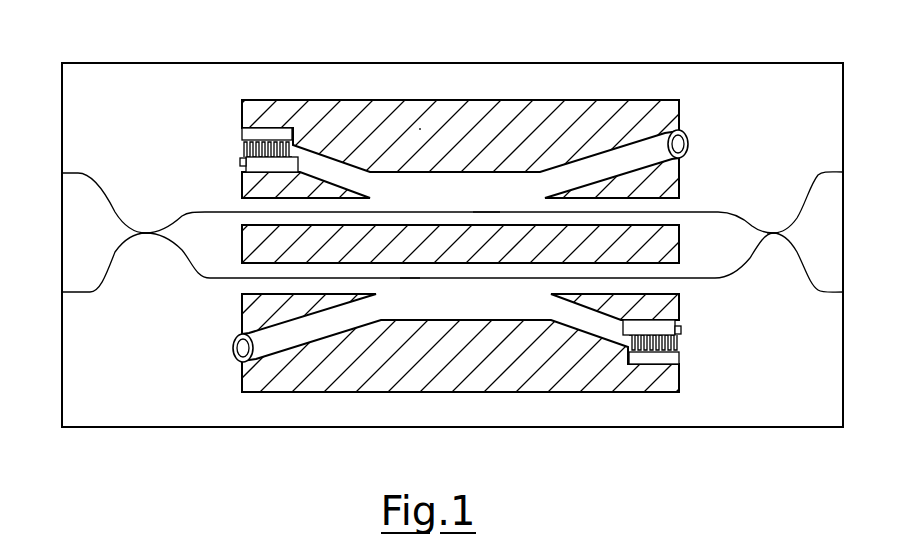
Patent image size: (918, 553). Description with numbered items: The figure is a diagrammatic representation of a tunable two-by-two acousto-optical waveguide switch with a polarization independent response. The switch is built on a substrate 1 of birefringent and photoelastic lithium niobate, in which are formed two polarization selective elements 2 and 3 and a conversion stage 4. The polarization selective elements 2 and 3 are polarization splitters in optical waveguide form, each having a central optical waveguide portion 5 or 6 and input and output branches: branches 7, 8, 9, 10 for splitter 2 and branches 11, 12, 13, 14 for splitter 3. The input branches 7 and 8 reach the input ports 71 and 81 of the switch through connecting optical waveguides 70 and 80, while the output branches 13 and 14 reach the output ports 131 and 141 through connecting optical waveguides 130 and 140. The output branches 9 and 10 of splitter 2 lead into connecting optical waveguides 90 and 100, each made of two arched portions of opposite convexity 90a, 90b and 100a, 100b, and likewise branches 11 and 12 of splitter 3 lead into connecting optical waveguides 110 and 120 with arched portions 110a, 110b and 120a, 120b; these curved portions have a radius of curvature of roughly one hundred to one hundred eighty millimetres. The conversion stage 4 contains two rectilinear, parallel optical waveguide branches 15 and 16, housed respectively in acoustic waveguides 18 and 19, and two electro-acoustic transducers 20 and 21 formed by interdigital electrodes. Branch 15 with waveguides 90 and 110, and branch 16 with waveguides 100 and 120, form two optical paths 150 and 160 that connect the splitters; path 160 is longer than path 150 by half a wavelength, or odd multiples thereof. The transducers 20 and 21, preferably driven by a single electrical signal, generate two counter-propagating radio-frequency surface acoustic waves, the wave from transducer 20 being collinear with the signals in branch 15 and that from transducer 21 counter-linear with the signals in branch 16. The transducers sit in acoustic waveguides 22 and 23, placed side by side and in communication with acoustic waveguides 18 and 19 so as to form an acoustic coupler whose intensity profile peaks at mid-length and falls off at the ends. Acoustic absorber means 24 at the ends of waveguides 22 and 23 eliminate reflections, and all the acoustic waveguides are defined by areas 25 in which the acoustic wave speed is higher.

The substrate 1 is at (147, 430).
The polarization selective element 2 is at (145, 239).
The polarization selective element 3 is at (775, 239).
The conversion stage 4 is at (539, 97).
The central optical waveguide portion 5 is at (146, 228).
The central optical waveguide portion 6 is at (780, 230).
The input branch 7 is at (138, 226).
The input branch 8 is at (136, 242).
The output branch 9 is at (152, 228).
The output branch 10 is at (160, 240).
The output branch 11 is at (778, 228).
The output branch 12 is at (766, 265).
The output branch 13 is at (792, 230).
The output branch 14 is at (802, 265).
The optical waveguide branch 15 is at (428, 214).
The optical waveguide branch 16 is at (450, 279).
The acoustic waveguide 18 is at (420, 130).
The acoustic waveguide 19 is at (505, 320).
The electro-acoustic transducer 20 is at (262, 145).
The electro-acoustic transducer 21 is at (658, 340).
The acoustic waveguide 22 is at (362, 165).
The acoustic waveguide 23 is at (330, 330).
The acoustic absorber means 24 is at (678, 128).
The area 25 is at (318, 150).
The connecting optical waveguide 70 is at (100, 176).
The input port 71 is at (62, 170).
The connecting optical waveguide 80 is at (102, 289).
The input port 81 is at (62, 295).
The connecting optical waveguide 90 is at (188, 208).
The curved portion 90a is at (163, 230).
The curved portion 90b is at (200, 212).
The connecting optical waveguide 100 is at (198, 272).
The curved portion 100a is at (182, 255).
The curved portion 100b is at (217, 282).
The connecting optical waveguide 110 is at (743, 213).
The curved portion 110a is at (762, 228).
The curved portion 110b is at (722, 215).
The connecting optical waveguide 120 is at (742, 264).
The curved portion 120a is at (757, 272).
The curved portion 120b is at (722, 280).
The connecting optical waveguide 130 is at (815, 174).
The output port 131 is at (845, 172).
The connecting optical waveguide 140 is at (815, 294).
The output port 141 is at (845, 293).
The optical path 150 is at (475, 211).
The optical path 160 is at (411, 282).